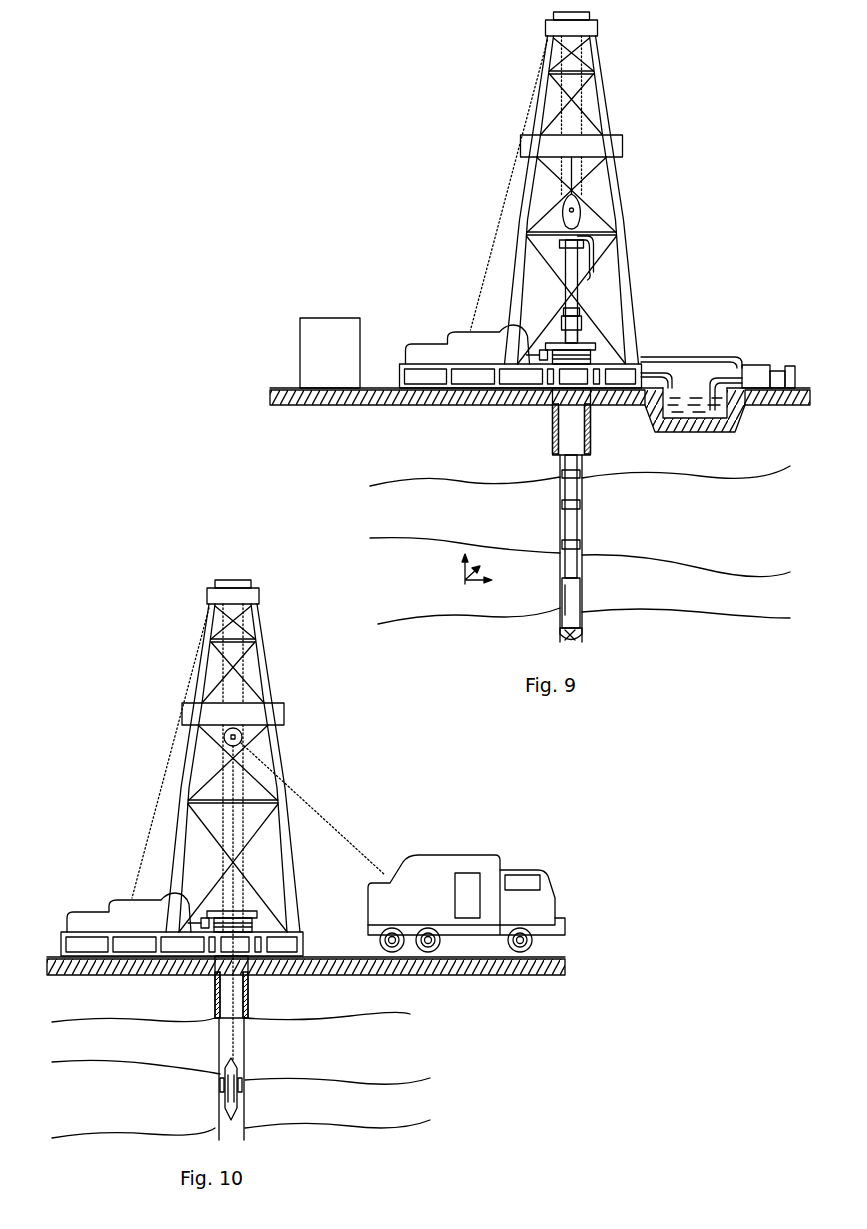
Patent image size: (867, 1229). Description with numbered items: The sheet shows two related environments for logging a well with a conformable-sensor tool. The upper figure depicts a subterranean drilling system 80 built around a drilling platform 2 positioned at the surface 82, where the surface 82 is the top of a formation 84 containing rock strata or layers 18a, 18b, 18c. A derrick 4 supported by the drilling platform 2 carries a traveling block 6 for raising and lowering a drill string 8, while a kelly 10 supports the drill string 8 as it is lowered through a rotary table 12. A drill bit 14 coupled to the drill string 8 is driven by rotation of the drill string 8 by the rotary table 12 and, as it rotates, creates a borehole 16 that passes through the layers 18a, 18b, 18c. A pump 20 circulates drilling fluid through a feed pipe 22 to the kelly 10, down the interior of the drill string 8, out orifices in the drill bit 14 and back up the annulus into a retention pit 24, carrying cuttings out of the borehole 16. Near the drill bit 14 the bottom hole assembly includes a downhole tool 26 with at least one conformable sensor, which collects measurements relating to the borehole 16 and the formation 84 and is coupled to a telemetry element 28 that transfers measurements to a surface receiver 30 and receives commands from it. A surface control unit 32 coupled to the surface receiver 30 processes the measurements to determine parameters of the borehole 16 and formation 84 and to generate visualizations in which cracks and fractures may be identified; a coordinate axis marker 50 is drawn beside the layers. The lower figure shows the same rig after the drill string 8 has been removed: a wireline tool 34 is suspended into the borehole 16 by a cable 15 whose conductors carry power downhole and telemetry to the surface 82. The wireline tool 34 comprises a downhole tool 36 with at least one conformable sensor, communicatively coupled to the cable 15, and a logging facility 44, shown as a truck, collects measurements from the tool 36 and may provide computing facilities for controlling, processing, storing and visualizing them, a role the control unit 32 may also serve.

In FIG. 9, the drilling platform 2 is at (505, 356).
In FIG. 10, the drilling platform 2 is at (204, 924).
In FIG. 9, the derrick 4 is at (557, 188).
In FIG. 10, the derrick 4 is at (258, 756).
In FIG. 9, the traveling block 6 is at (605, 193).
In FIG. 10, the traveling block 6 is at (270, 878).
In FIG. 9, the drill string 8 is at (573, 472).
In FIG. 9, the kelly 10 is at (613, 277).
In FIG. 9, the rotary table 12 is at (605, 331).
In FIG. 10, the rotary table 12 is at (263, 902).
In FIG. 9, the drill bit 14 is at (578, 632).
In FIG. 9, the cable 15 is at (572, 421).
In FIG. 10, the cable 15 is at (178, 987).
In FIG. 9, the borehole 16 is at (585, 490).
In FIG. 10, the borehole 16 is at (238, 1038).
In FIG. 9, the rock strata or layer 18a is at (406, 576).
In FIG. 10, the rock strata or layer 18a is at (408, 1001).
In FIG. 9, the rock strata or layer 18b is at (580, 492).
In FIG. 10, the rock strata or layer 18b is at (88, 1051).
In FIG. 9, the rock strata or layer 18c is at (728, 465).
In FIG. 10, the rock strata or layer 18c is at (88, 1123).
In FIG. 9, the pump 20 is at (755, 366).
In FIG. 9, the feed pipe 22 is at (690, 356).
In FIG. 9, the retention pit 24 is at (700, 412).
In FIG. 9, the downhole tool 26 is at (565, 600).
In FIG. 9, the telemetry element 28 is at (572, 584).
In FIG. 9, the surface receiver 30 is at (617, 300).
In FIG. 9, the surface control unit 32 is at (343, 360).
In FIG. 10, the wireline tool 34 is at (226, 1082).
In FIG. 10, the downhole tool 36 is at (222, 1094).
In FIG. 10, the logging facility 44 is at (440, 857).
In FIG. 9, the coordinate system 50 is at (456, 577).
In FIG. 9, the subterranean drilling system 80 is at (702, 157).
In FIG. 9, the surface 82 is at (270, 386).
In FIG. 10, the surface 82 is at (52, 955).
In FIG. 9, the formation 84 is at (326, 458).
In FIG. 10, the formation 84 is at (524, 1032).